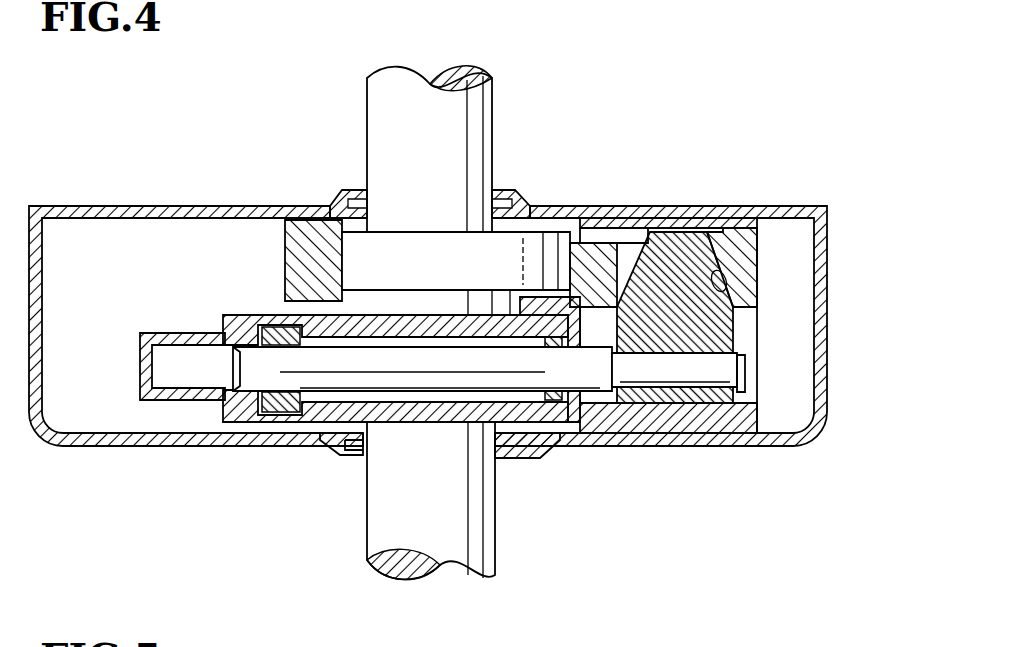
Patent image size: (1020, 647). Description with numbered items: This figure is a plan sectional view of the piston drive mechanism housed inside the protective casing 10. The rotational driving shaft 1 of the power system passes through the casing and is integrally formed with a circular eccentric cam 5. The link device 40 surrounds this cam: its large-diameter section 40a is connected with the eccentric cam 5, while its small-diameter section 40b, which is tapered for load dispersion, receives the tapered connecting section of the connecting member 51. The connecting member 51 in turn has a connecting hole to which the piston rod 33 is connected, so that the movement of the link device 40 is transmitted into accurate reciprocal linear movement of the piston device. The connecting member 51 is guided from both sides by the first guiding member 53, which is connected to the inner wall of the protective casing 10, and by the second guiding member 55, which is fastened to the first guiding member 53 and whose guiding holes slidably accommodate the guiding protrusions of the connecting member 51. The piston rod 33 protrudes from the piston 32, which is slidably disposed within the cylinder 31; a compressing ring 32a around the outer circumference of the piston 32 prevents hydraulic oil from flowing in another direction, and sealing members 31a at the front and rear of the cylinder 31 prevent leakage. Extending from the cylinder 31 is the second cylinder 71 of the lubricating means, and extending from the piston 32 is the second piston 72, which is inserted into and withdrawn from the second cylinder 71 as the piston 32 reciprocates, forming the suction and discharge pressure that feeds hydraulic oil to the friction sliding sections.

The rotational driving shaft 1 is at (385, 85).
The protective casing 10 is at (122, 205).
The large-diameter section 40a is at (340, 218).
The eccentric cam 5 is at (523, 245).
The link device 40 is at (600, 242).
The second guiding member 55 is at (695, 222).
The small-diameter section 40b is at (727, 285).
The connecting member 51 is at (732, 335).
The first guiding member 53 is at (757, 423).
The second cylinder 71 is at (147, 392).
The second piston 72 is at (243, 383).
The bearings 31a is at (280, 405).
The cylinder 31 is at (327, 422).
The piston rod 33 is at (597, 388).
The piston 32 is at (477, 402).
The compressing ring 32a is at (453, 418).